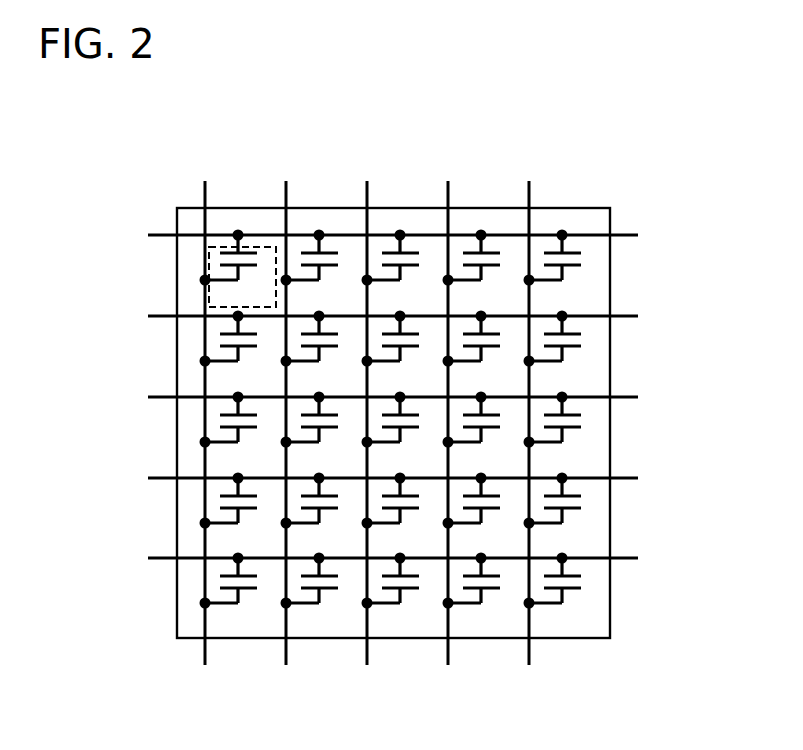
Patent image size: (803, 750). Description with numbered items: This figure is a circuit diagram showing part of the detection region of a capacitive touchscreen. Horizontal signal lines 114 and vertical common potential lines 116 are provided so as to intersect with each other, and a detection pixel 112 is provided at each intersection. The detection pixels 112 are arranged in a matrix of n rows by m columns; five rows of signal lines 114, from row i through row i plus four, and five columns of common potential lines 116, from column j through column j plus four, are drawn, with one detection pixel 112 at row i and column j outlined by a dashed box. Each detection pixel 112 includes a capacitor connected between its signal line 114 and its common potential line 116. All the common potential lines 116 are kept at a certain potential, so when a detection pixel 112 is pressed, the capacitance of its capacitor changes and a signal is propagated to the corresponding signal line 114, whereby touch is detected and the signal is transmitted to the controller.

The detection pixel 112 is at (209, 292).
The signal lines 114 is at (648, 232).
The common potential lines 116 is at (190, 178).